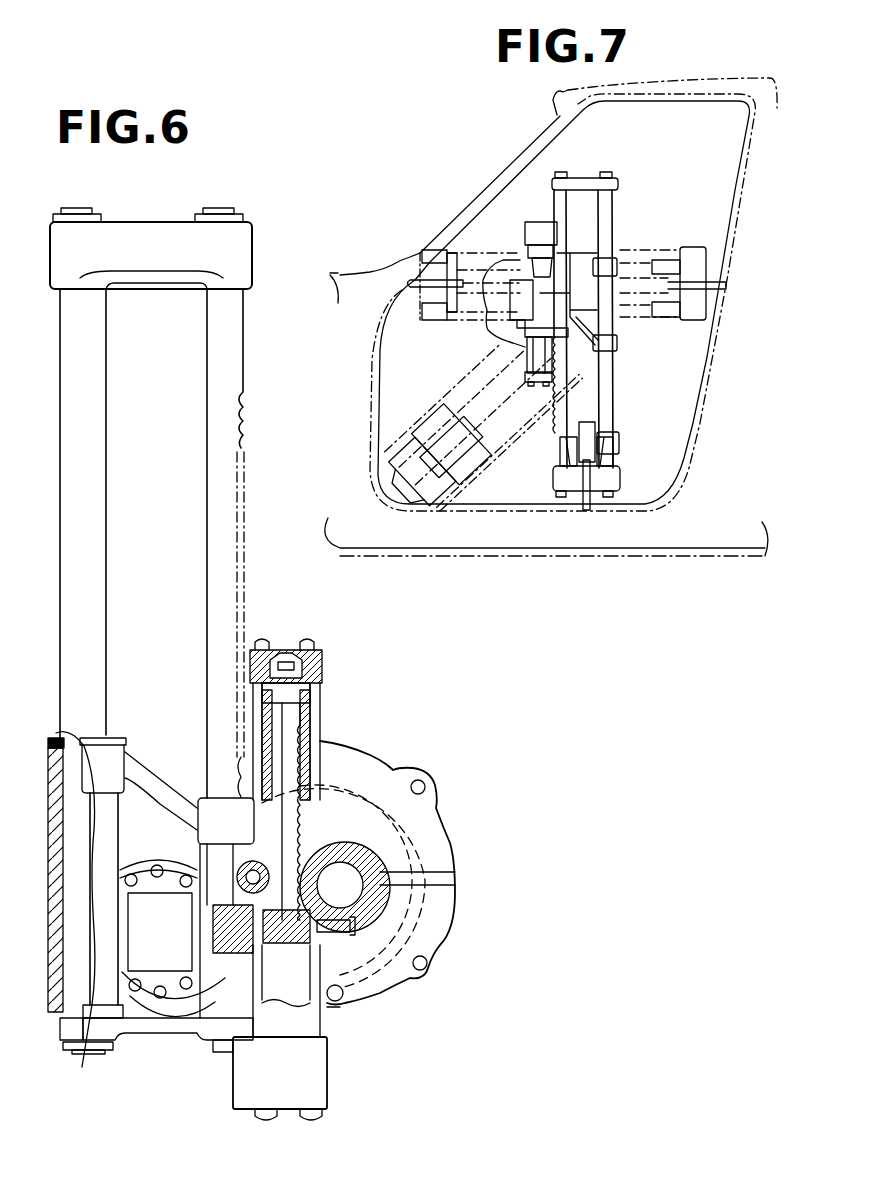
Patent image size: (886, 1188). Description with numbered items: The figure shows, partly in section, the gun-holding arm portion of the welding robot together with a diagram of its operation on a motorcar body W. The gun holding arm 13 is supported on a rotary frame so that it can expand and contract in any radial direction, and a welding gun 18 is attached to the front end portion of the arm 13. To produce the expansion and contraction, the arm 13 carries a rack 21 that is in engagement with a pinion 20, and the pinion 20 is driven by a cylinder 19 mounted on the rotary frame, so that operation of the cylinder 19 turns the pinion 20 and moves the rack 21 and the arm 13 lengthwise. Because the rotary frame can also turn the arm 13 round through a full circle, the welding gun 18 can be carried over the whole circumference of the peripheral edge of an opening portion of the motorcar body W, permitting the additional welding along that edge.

In FIG. 6, the gun holding arm 13 is at (72, 435).
In FIG. 7, the gun holding arm 13 is at (608, 393).
In FIG. 7, the welding gun 18 is at (582, 477).
In FIG. 6, the cylinder 19 is at (313, 718).
In FIG. 7, the cylinder 19 is at (542, 362).
In FIG. 6, the pinion 20 is at (380, 795).
In FIG. 6, the rack 21 is at (243, 439).
In FIG. 7, the motorcar body W is at (366, 272).